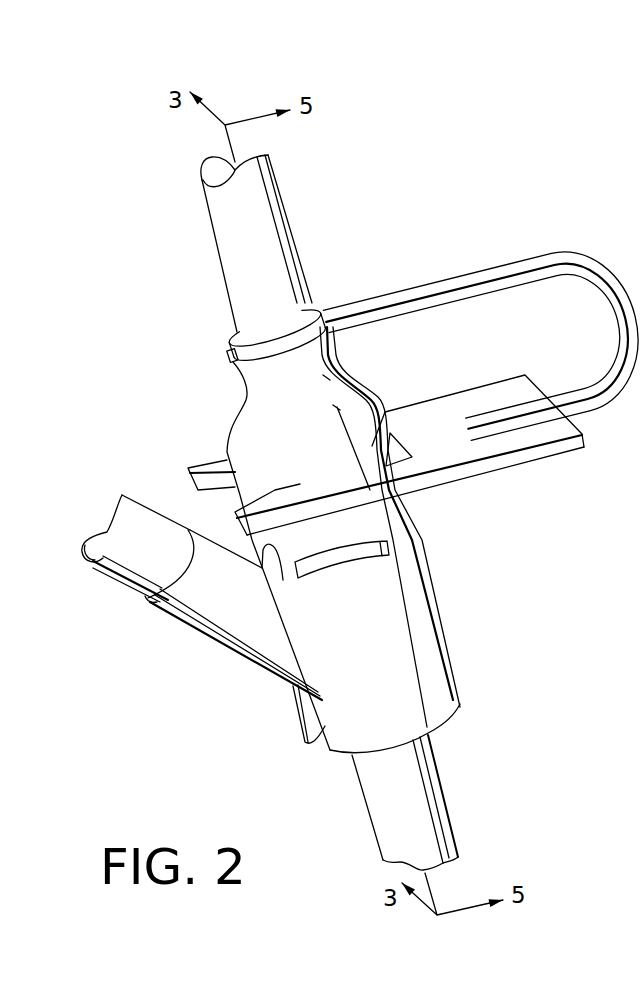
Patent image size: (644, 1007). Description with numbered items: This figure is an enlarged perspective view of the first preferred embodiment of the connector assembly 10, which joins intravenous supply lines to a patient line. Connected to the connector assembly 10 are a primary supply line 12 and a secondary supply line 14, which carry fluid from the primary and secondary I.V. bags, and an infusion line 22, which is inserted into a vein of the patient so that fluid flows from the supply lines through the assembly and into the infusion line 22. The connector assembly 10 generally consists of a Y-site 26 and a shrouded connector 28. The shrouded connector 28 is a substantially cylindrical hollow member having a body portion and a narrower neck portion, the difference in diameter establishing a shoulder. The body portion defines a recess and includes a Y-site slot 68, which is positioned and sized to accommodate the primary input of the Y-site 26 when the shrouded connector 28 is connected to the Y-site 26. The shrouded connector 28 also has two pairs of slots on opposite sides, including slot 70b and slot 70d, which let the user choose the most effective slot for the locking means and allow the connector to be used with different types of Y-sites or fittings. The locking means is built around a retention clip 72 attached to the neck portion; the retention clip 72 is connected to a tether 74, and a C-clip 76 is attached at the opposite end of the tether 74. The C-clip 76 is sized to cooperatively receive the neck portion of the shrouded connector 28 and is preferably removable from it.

The connector assembly 10 is at (400, 210).
The primary supply line 12 is at (135, 575).
The secondary supply line 14 is at (217, 233).
The infusion line 22 is at (432, 793).
The Y-site 26 is at (253, 670).
The shrouded connector 28 is at (458, 692).
The Y-site slot 68 is at (302, 722).
The slot 70b is at (393, 482).
The slot 70d is at (382, 560).
The retention clip 72 is at (530, 455).
The tether 74 is at (552, 258).
The C-clip 76 is at (228, 350).